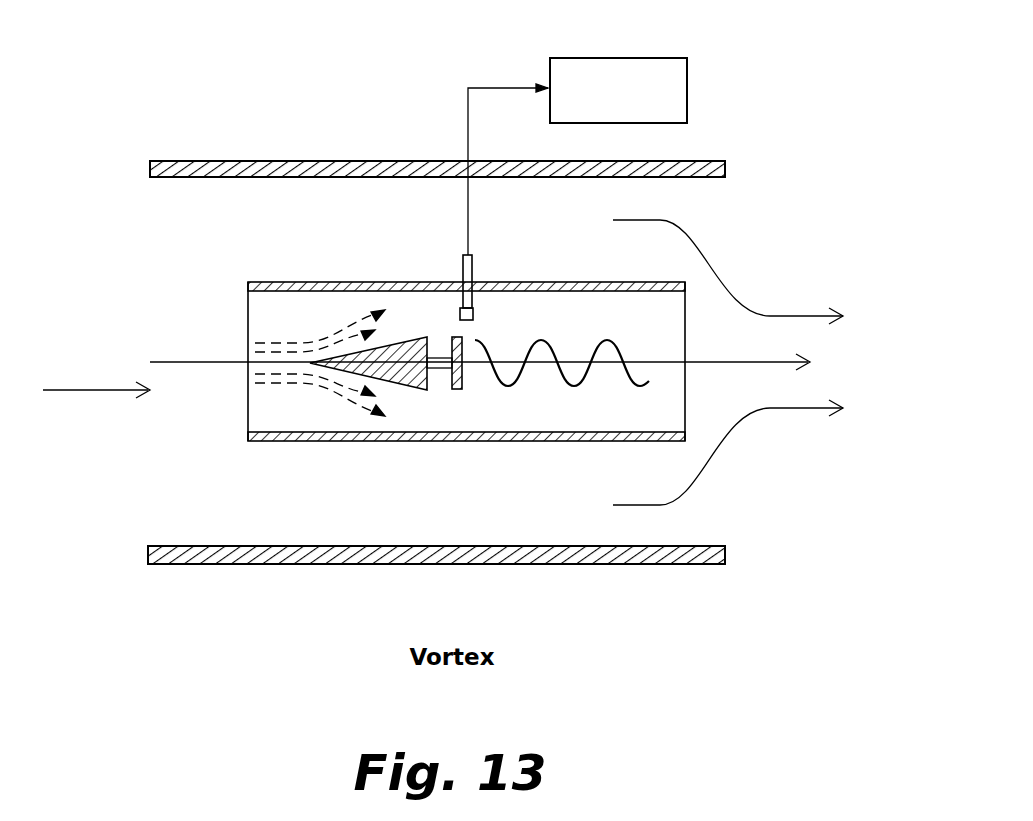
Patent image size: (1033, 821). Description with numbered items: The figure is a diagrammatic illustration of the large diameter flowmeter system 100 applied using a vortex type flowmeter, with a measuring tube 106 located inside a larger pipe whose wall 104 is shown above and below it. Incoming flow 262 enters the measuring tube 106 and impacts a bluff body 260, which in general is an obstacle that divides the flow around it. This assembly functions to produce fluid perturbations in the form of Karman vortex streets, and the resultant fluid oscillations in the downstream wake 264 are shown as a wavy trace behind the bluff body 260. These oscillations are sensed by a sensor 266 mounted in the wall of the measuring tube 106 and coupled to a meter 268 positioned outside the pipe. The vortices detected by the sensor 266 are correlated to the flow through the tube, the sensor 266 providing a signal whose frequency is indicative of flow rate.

The flow meter system 100 is at (240, 145).
The pipe wall 104 is at (292, 162).
The measuring tube 106 is at (567, 282).
The bluff body 260 is at (410, 337).
The incoming flow 262 is at (195, 360).
The fluid oscillations in the downstream wake 264 is at (555, 348).
The sensor 266 is at (478, 310).
The meter 268 is at (640, 53).